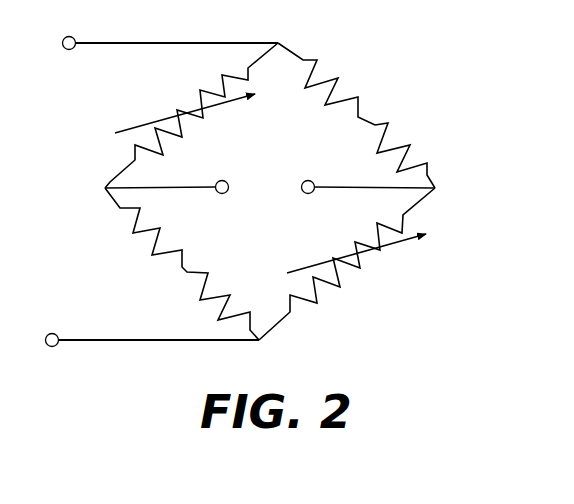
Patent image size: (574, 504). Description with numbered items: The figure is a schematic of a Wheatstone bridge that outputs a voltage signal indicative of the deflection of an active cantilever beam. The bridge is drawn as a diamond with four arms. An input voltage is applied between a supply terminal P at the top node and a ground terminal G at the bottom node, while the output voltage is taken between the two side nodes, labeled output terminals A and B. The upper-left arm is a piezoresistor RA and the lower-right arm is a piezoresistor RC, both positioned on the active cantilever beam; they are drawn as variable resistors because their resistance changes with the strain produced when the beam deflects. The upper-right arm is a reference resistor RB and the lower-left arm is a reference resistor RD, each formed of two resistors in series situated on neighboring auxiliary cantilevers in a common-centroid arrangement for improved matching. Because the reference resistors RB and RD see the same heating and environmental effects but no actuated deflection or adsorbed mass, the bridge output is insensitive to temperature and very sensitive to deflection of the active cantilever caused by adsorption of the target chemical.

The power supply terminal P is at (170, 30).
The ground terminal G is at (151, 327).
The output terminal A is at (167, 198).
The output terminal B is at (368, 198).
The piezoresistor RA is at (191, 115).
The reference resistor RB is at (385, 111).
The piezoresistor RC is at (347, 264).
The reference resistor RD is at (162, 264).